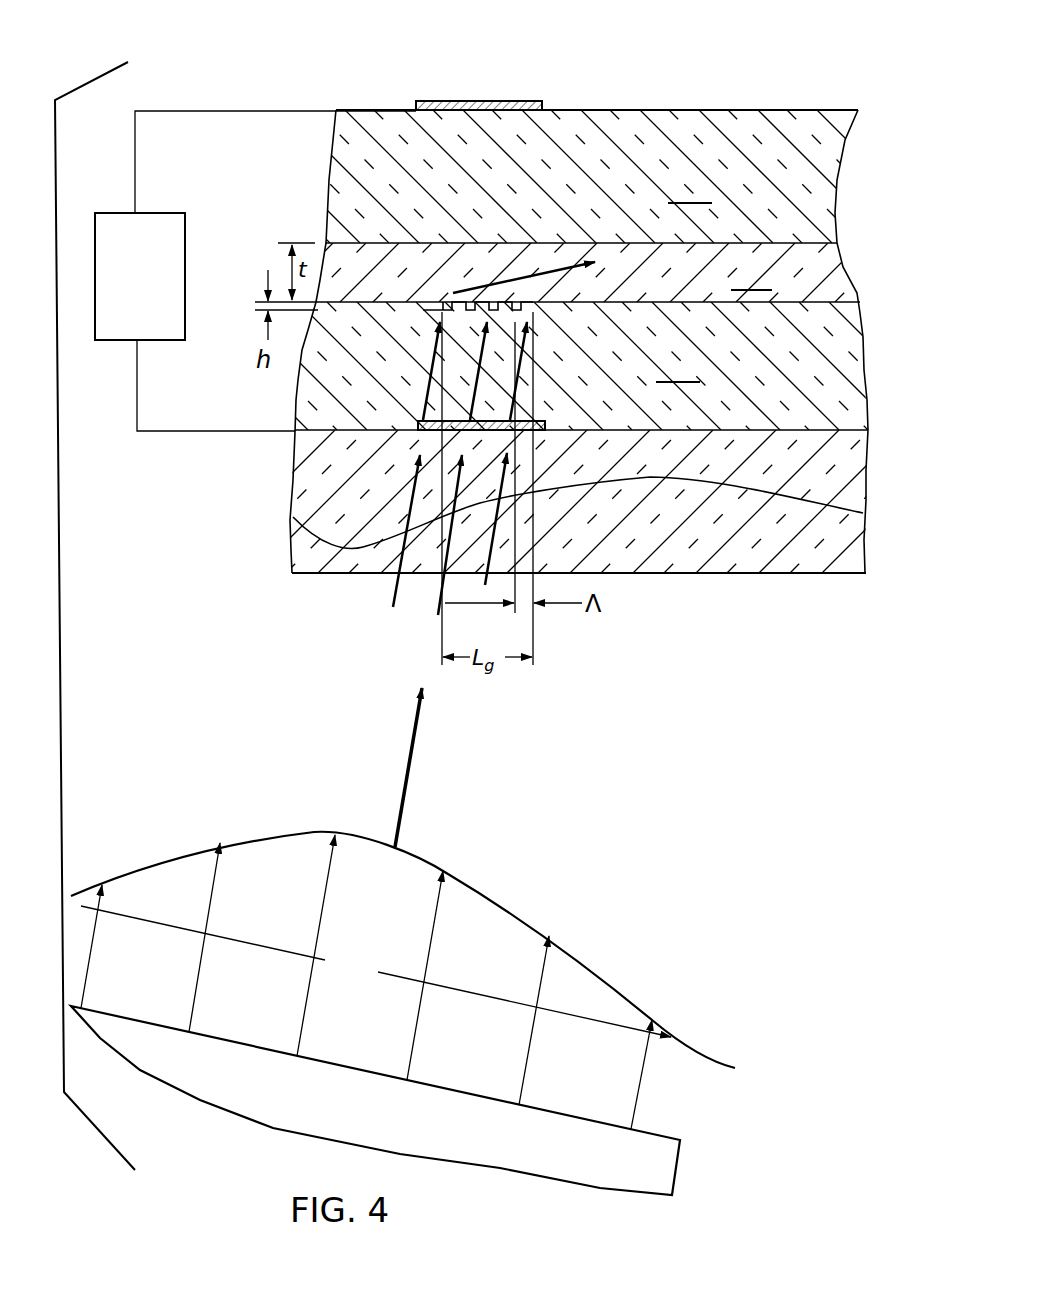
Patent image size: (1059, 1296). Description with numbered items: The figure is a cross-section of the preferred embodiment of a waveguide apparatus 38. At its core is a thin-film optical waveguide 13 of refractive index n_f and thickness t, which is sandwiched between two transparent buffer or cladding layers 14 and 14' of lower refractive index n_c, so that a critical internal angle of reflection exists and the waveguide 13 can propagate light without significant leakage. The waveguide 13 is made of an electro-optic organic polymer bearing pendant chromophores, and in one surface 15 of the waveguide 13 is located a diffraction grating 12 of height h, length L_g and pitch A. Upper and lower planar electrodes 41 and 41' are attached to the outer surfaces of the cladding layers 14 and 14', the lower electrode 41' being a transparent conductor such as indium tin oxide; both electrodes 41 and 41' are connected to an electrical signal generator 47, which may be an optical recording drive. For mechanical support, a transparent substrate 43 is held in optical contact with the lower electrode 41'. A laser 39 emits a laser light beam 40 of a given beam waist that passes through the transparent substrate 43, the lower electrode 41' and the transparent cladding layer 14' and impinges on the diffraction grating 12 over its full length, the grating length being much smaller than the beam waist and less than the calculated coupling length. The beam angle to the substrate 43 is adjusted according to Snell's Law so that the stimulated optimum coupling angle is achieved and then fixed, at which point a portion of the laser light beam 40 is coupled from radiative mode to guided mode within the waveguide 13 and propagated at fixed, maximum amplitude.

The waveguide apparatus 38 is at (673, 83).
The upper planar electrode 41 is at (479, 71).
The upper cladding layer 14 is at (544, 153).
The electrical signal generator 47 is at (157, 227).
The diffraction grating 12 is at (443, 300).
The thin-film optical waveguide 13 is at (838, 257).
The lower cladding layer 14' is at (553, 356).
The waveguide surface 15 is at (345, 315).
The lower planar electrode 41' is at (475, 423).
The transparent substrate 43 is at (717, 537).
The laser light beam 40 is at (498, 931).
The laser 39 is at (342, 1128).